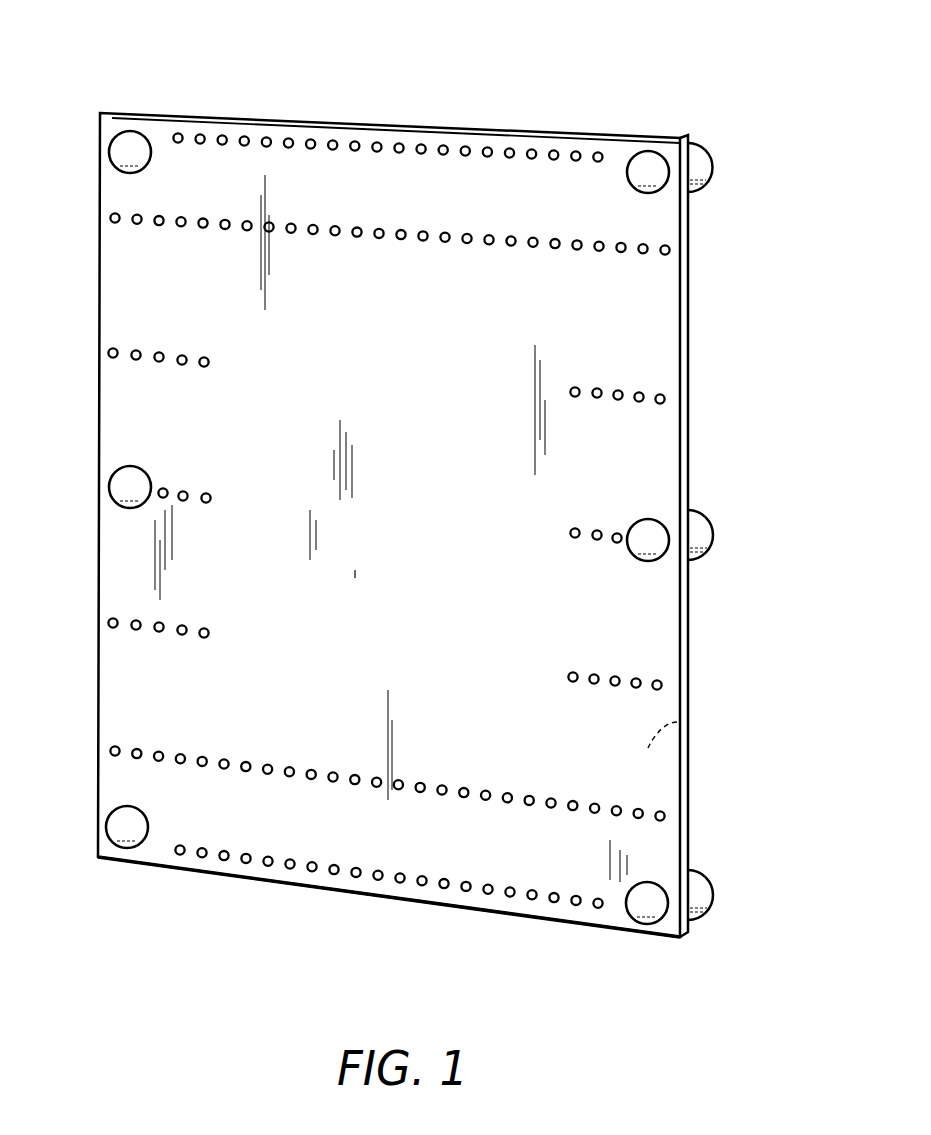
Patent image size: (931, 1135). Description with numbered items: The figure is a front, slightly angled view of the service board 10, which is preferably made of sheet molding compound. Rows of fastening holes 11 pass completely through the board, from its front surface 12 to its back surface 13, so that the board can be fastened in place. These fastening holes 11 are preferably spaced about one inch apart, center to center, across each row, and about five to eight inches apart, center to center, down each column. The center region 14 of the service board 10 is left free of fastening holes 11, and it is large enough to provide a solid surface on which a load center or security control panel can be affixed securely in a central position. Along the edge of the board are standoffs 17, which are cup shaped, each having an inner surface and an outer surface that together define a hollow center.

The service board 10 is at (396, 124).
The fastening holes 11 is at (177, 138).
The front surface 12 is at (658, 603).
The back surface 13 is at (677, 722).
The center region 14 is at (355, 574).
The standoffs 17 is at (702, 160).